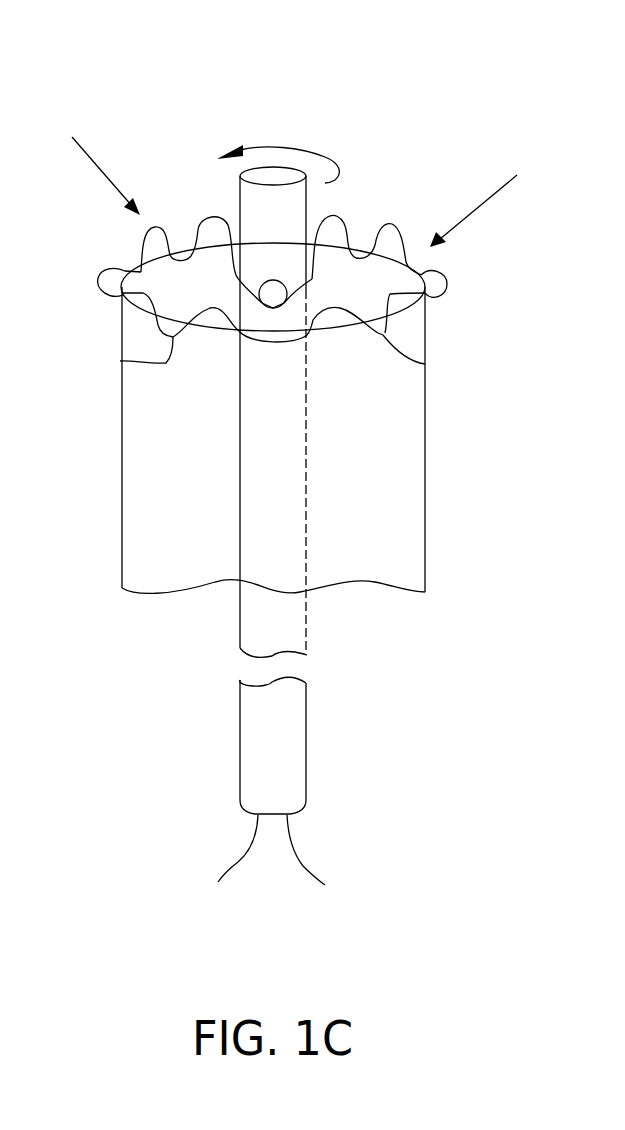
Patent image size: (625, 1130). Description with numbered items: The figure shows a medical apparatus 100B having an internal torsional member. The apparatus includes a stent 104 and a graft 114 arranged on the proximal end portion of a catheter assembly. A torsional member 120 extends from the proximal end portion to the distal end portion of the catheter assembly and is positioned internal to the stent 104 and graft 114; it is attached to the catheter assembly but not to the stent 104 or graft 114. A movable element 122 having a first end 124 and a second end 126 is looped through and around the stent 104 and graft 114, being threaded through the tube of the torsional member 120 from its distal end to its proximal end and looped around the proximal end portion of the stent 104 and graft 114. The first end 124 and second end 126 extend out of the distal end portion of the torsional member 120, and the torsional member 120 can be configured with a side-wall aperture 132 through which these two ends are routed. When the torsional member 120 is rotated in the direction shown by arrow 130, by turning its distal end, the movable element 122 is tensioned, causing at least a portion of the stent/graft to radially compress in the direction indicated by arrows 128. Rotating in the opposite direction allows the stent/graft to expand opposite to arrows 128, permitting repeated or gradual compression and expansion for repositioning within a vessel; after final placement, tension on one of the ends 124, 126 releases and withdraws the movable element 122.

The medical apparatus 100B is at (338, 54).
The stent 104 is at (122, 532).
The graft 114 is at (186, 589).
The torsional member 120 is at (306, 204).
The movable element 122 is at (120, 361).
The first end 124 is at (300, 861).
The second end 126 is at (252, 846).
The arrows 128 is at (93, 161).
The arrow 130 is at (302, 152).
The side-wall aperture 132 is at (425, 364).